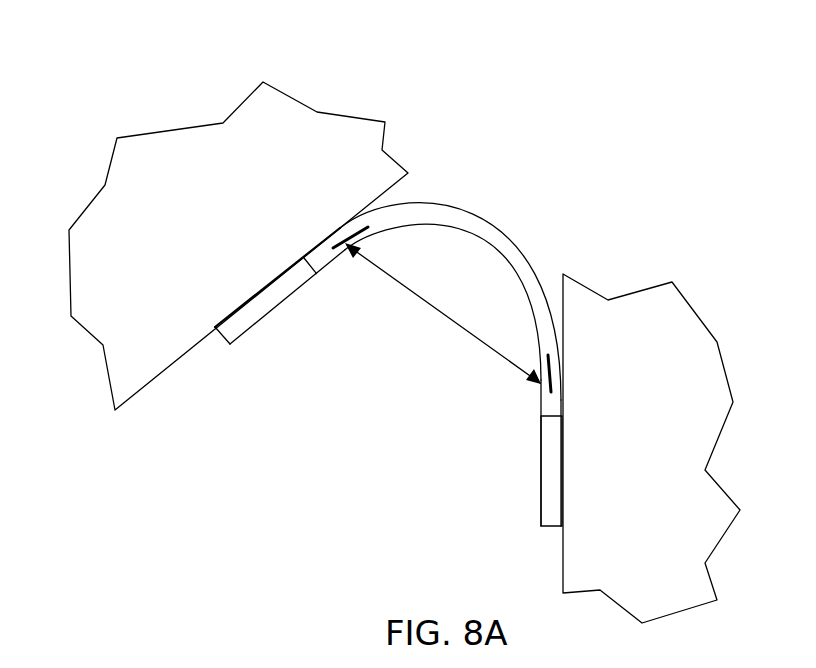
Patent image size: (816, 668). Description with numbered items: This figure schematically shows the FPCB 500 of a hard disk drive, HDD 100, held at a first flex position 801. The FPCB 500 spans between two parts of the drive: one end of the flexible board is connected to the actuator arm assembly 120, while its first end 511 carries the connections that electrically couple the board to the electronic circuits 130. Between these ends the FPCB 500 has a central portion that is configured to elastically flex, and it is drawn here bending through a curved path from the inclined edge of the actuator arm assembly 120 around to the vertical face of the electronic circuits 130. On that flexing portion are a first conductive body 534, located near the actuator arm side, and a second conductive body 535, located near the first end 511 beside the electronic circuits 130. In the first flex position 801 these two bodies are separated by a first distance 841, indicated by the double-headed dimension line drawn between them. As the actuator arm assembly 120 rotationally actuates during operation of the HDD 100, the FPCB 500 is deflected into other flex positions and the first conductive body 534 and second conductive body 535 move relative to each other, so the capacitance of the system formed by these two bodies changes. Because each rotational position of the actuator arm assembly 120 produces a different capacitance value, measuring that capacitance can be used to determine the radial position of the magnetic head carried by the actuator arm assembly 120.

The HDD 100 is at (114, 50).
The first flex position 801 is at (635, 98).
The actuator arm assembly 120 is at (212, 206).
The electronic circuits 130 is at (660, 464).
The FPCB 500 is at (445, 205).
The first end 511 is at (541, 453).
The first conductive body 534 is at (367, 248).
The second conductive body 535 is at (547, 356).
The first distance 841 is at (413, 295).